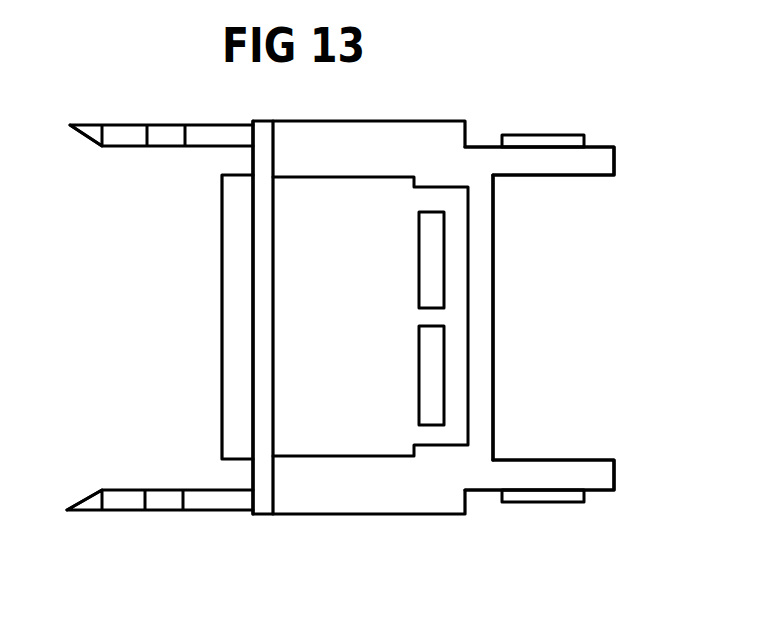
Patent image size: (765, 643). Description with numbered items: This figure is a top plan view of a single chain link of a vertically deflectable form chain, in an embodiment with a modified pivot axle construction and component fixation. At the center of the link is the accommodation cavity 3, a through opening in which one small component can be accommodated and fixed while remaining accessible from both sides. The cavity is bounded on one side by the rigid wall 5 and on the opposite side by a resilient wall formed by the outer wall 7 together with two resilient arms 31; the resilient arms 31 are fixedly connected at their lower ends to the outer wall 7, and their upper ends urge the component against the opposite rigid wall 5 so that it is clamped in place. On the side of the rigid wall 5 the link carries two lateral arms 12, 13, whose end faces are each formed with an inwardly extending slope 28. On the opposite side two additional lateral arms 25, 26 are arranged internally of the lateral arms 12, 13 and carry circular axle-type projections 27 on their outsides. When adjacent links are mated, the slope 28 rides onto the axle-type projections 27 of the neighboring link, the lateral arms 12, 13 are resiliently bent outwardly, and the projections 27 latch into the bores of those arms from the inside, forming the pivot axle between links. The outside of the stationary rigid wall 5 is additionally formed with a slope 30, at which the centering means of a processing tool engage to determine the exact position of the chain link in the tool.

The accommodation cavity 3 is at (353, 337).
The rigid wall 5 is at (275, 318).
The outer wall 7 is at (483, 314).
The lateral arm 12 is at (95, 130).
The lateral arm 13 is at (92, 506).
The lateral arm 25 is at (605, 158).
The lateral arm 26 is at (603, 477).
The axle-type projection 27 is at (550, 137).
The slope 28 is at (88, 138).
The slope 30 is at (230, 311).
The resilient arm 31 is at (427, 257).